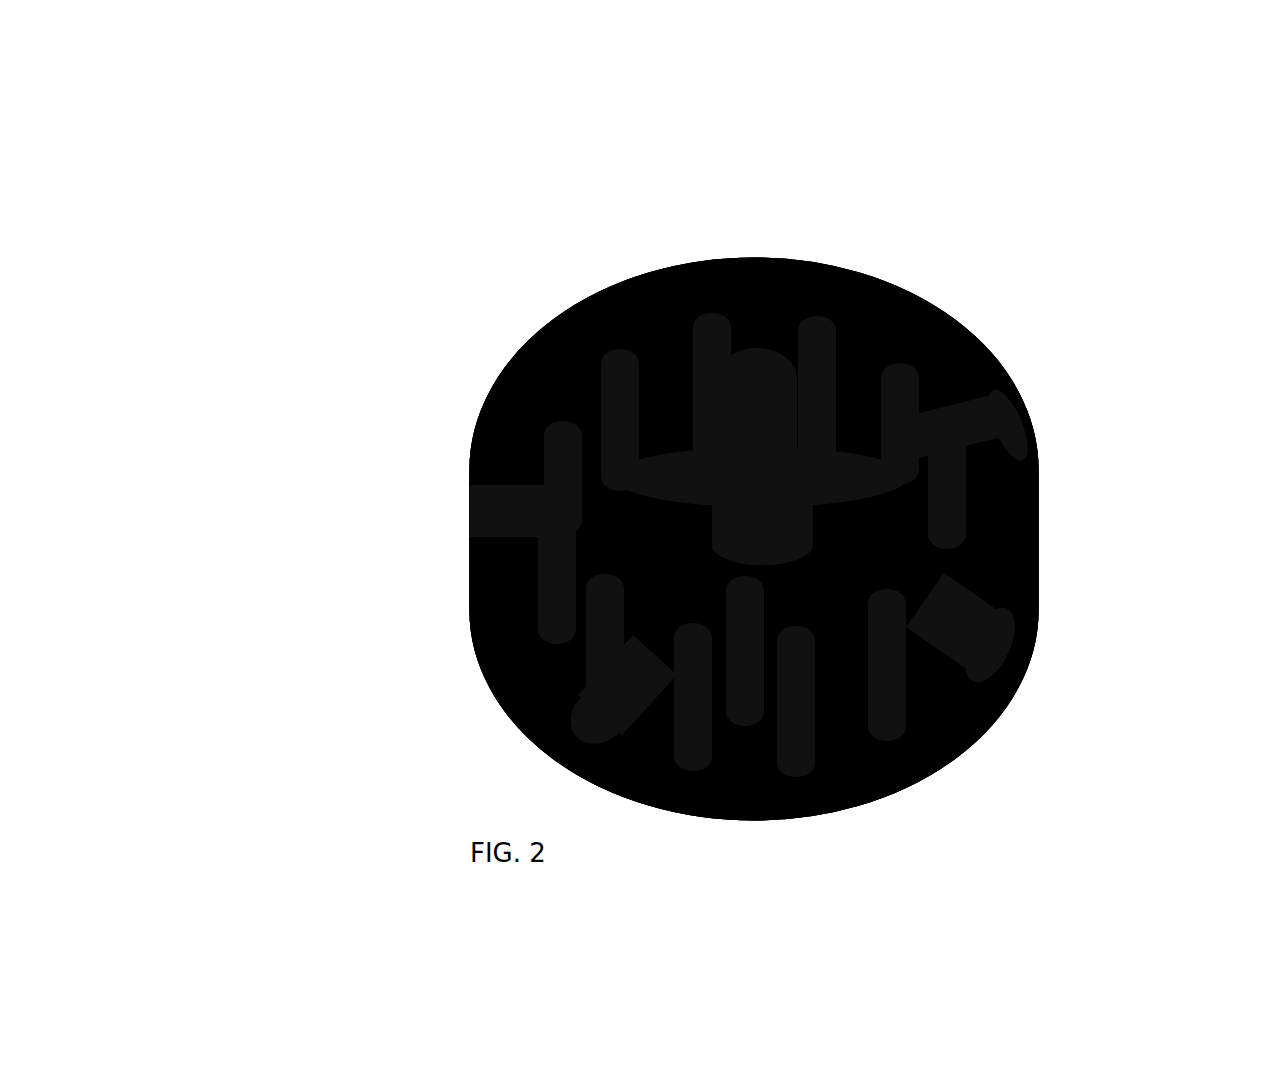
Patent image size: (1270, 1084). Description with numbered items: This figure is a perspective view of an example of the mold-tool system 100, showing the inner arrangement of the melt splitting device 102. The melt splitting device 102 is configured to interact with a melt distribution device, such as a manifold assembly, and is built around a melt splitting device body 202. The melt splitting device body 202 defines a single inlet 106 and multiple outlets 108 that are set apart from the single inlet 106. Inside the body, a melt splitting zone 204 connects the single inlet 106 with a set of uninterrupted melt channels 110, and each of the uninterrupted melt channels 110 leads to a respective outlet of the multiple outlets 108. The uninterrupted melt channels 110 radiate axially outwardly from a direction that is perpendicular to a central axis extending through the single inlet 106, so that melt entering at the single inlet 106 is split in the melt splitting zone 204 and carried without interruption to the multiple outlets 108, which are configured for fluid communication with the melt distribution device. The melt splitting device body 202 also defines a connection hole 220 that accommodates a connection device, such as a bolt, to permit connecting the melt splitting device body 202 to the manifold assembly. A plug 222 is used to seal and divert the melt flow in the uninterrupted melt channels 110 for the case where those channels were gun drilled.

The mold-tool system 100 is at (248, 148).
The melt splitting device 102 is at (329, 259).
The melt splitting device body 202 is at (493, 430).
The single inlet 106 is at (780, 427).
The melt splitting zone 204 is at (807, 495).
The multiple outlets 108 is at (743, 712).
The connection hole 220 is at (962, 490).
The uninterrupted melt channels 110 is at (618, 547).
The plug 222 is at (585, 705).